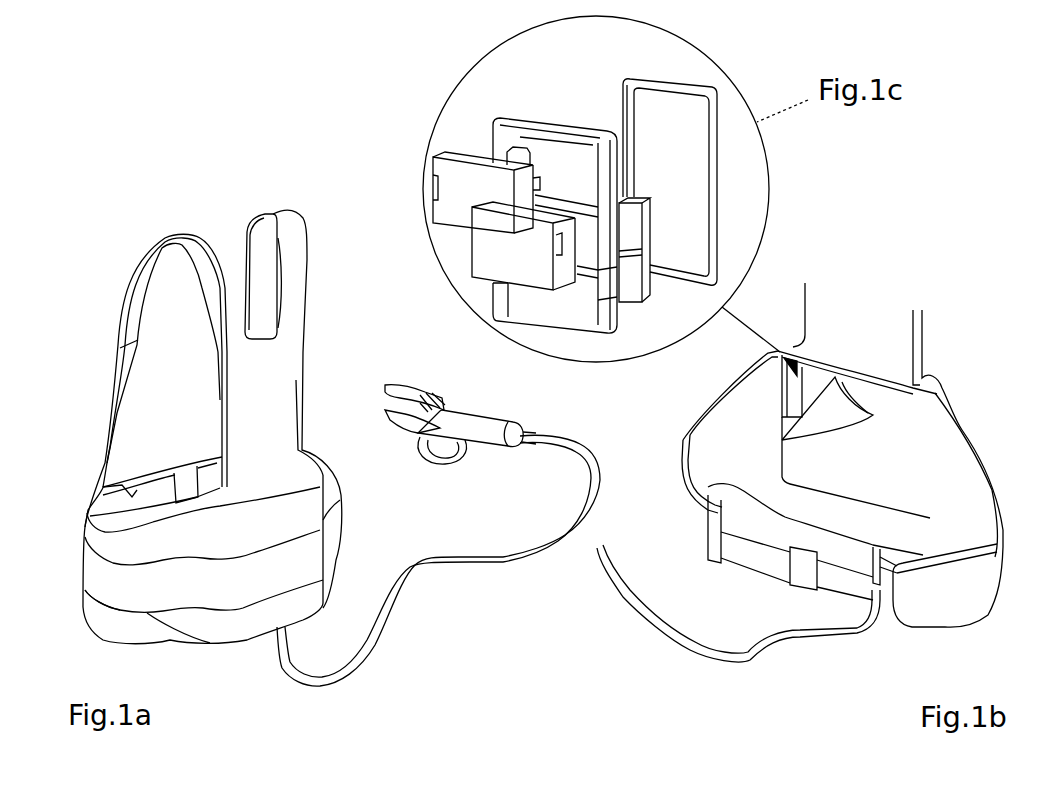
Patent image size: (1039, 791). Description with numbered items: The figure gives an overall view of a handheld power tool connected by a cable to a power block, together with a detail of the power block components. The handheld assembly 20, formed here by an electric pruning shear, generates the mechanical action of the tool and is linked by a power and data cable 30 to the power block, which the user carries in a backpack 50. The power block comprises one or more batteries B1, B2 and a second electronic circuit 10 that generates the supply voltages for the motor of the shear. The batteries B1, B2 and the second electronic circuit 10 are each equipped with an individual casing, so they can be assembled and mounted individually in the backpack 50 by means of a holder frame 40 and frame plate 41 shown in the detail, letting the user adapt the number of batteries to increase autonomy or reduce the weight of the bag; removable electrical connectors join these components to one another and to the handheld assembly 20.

In FIG. 1C, the second electronic circuit 10 is at (680, 268).
In FIG. 1A, the handheld assembly 20 is at (472, 415).
In FIG. 1A, the power and data cable 30 is at (418, 572).
In FIG. 1B, the power and data cable 30 is at (790, 640).
In FIG. 1C, the frame holder 40 is at (558, 110).
In FIG. 1C, the frame plate 41 is at (683, 83).
In FIG. 1A, the backpack 50 is at (117, 587).
In FIG. 1C, the battery B1 is at (450, 173).
In FIG. 1C, the battery B2 is at (487, 257).